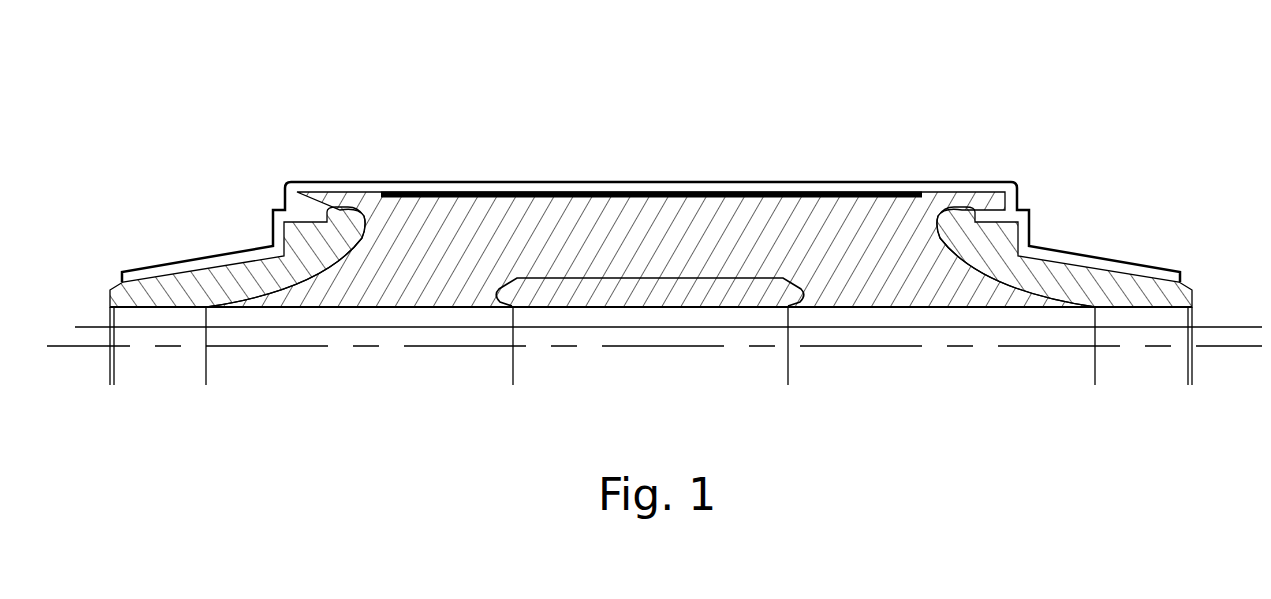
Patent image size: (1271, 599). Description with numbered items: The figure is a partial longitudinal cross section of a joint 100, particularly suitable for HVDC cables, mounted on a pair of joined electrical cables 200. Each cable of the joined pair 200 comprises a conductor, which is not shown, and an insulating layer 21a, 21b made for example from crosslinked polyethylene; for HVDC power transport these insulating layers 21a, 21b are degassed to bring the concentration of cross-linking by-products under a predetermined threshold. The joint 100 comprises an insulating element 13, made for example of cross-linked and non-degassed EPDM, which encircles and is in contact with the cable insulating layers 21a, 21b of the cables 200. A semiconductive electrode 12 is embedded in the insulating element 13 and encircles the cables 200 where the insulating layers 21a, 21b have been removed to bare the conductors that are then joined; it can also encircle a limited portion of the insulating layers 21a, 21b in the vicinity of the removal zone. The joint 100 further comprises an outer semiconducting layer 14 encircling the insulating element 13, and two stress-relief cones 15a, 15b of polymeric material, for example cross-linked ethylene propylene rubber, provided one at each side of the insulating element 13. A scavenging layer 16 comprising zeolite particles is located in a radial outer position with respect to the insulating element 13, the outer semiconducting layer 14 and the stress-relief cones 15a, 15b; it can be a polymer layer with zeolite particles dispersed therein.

The joint 100 is at (419, 139).
The semiconductive electrode 12 is at (632, 297).
The insulating element 13 is at (505, 232).
The outer semiconducting layer 14 is at (693, 192).
The stress-relief cone 15a is at (213, 278).
The stress-relief cone 15b is at (1093, 278).
The scavenging layer 16 is at (795, 188).
The insulating layer 21a is at (310, 317).
The insulating layer 21b is at (930, 317).
The pair of joined electrical cables 200 is at (716, 350).